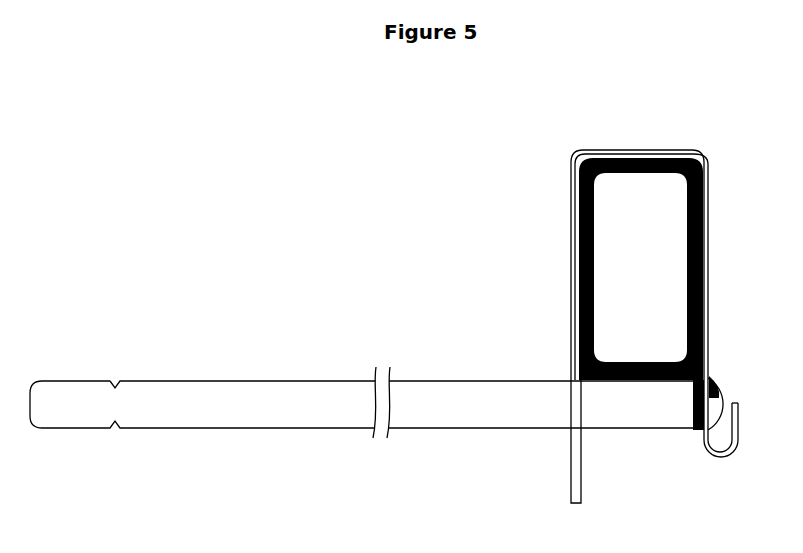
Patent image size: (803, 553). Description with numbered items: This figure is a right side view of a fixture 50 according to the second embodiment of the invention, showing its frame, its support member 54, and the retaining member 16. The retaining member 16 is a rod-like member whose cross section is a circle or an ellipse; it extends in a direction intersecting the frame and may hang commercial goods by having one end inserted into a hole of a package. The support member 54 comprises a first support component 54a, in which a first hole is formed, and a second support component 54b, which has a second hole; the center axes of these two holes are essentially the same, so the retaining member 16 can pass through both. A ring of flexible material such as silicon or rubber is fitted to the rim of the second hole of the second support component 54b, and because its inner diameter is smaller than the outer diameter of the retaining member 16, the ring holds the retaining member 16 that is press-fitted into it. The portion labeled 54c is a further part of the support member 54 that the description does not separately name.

The retaining member 16 is at (428, 381).
The fixture 50 is at (440, 116).
The support member 54 is at (563, 139).
The first support component 54a is at (570, 272).
The second support component 54b is at (710, 268).
The clip top portion 54c is at (672, 149).